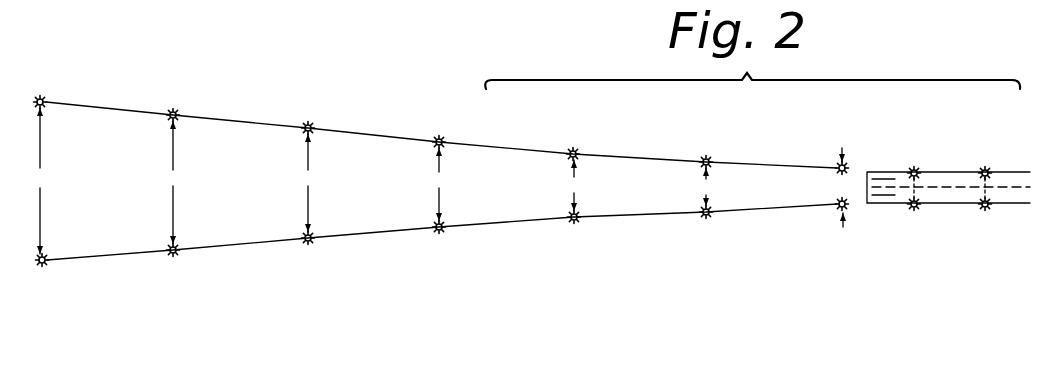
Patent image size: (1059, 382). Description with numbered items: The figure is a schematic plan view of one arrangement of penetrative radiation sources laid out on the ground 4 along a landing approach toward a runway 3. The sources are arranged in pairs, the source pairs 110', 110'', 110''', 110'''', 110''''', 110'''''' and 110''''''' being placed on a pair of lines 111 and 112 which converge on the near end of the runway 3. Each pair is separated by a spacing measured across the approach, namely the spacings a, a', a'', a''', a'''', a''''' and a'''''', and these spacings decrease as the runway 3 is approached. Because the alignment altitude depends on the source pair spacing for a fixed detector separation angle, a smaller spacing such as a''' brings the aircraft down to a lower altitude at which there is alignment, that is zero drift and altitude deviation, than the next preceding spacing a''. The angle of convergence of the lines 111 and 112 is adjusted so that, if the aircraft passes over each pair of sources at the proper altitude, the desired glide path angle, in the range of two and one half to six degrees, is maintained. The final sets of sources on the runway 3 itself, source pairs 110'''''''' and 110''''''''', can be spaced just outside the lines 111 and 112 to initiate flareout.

The source pair 110' is at (36, 179).
The source pair 110'' is at (180, 182).
The source pair 110''' is at (317, 186).
The source pair 110'''' is at (451, 186).
The source pair 110''''' is at (593, 183).
The source pair 110'''''' is at (729, 187).
The source pair 110''''''' is at (843, 180).
The source pair 110'''''''' is at (906, 196).
The source pair 110''''''''' is at (977, 206).
The line 111 is at (107, 108).
The line 112 is at (100, 257).
The ground 4 is at (238, 118).
The runway 3 is at (1015, 170).
The spacing a is at (40, 181).
The spacing a' is at (172, 182).
The spacing a'' is at (309, 183).
The spacing a''' is at (436, 184).
The spacing a'''' is at (572, 185).
The spacing a''''' is at (704, 187).
The spacing a'''''' is at (832, 187).